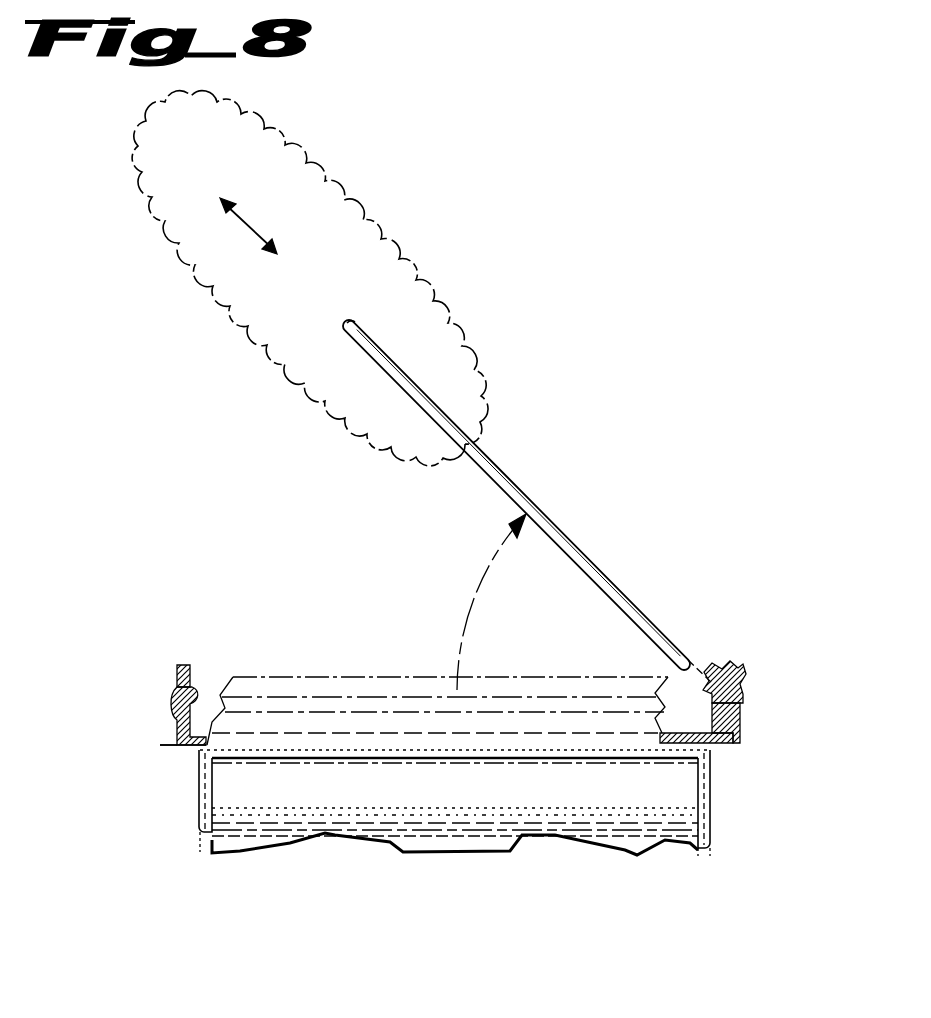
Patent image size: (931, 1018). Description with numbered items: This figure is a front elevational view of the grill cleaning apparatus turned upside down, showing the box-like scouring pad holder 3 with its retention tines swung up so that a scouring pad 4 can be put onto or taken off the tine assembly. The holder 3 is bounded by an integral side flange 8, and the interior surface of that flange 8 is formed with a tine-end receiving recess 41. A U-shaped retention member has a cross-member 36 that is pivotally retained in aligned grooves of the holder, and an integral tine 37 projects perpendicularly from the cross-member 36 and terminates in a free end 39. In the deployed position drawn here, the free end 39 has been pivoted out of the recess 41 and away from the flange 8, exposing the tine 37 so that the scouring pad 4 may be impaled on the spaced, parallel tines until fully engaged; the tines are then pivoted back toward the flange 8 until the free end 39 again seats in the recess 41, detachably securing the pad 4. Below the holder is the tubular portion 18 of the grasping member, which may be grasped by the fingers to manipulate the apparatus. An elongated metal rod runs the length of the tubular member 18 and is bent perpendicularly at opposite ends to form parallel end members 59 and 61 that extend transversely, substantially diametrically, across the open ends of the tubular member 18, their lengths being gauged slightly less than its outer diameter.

The scouring pad holder 3 is at (174, 743).
The scouring pad 4 is at (380, 236).
The side flange 8 is at (177, 722).
The tubular handle portion 18 is at (500, 806).
The cross-member 36 is at (742, 690).
The tine 37 is at (554, 522).
The free end 39 is at (346, 324).
The tine-end receiving recess 41 is at (186, 692).
The parallel end member 59 is at (705, 795).
The parallel end member 61 is at (205, 800).